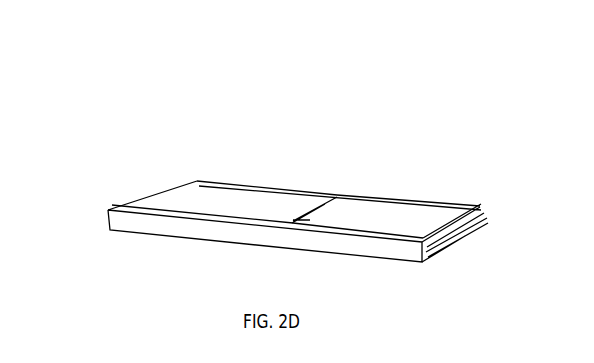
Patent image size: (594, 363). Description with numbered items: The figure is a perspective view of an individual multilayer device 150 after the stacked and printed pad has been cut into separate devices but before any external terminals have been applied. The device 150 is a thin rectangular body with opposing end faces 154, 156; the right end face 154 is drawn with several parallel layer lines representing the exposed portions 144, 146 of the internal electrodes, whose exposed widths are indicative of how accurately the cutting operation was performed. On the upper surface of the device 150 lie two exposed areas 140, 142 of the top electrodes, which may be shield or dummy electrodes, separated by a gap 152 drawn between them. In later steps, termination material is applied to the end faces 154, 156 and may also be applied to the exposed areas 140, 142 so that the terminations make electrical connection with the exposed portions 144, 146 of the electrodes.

The device 150 is at (292, 121).
The end face 156 is at (108, 210).
The exposed area of top electrode 140 is at (167, 191).
The exposed area of top electrode 142 is at (427, 203).
The gap between panels 152 is at (337, 197).
The end face 154 is at (481, 208).
The exposed portion of electrode 146 is at (487, 220).
The exposed portion of electrode 144 is at (458, 243).